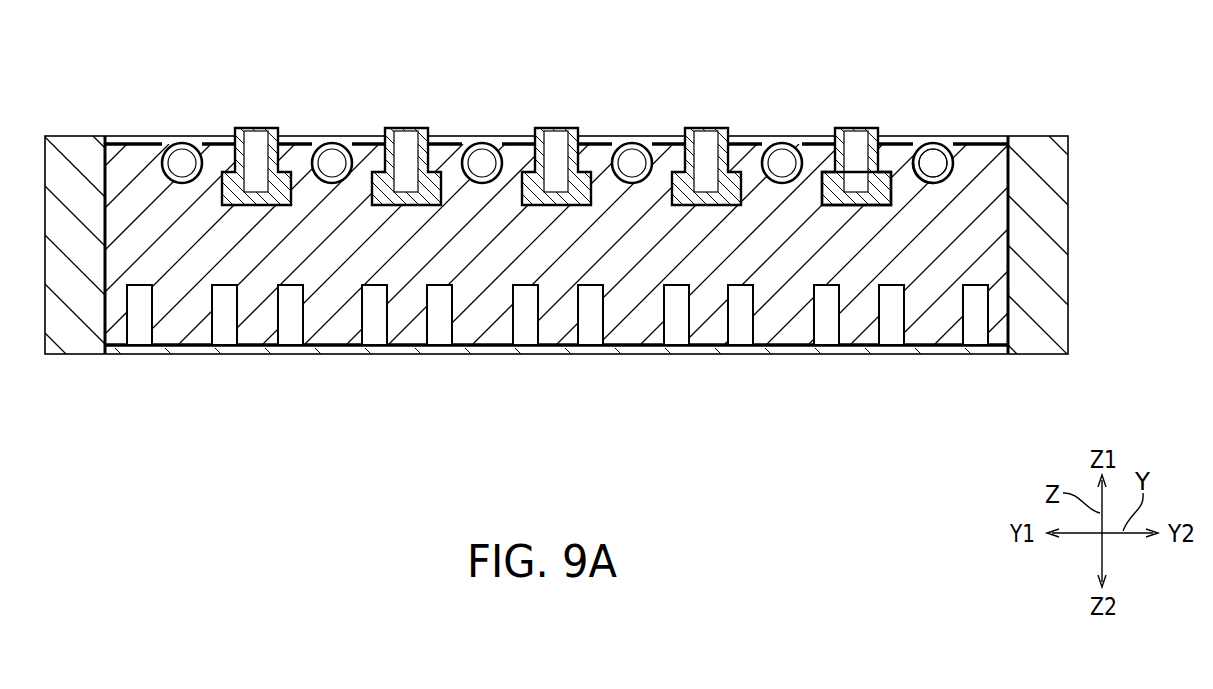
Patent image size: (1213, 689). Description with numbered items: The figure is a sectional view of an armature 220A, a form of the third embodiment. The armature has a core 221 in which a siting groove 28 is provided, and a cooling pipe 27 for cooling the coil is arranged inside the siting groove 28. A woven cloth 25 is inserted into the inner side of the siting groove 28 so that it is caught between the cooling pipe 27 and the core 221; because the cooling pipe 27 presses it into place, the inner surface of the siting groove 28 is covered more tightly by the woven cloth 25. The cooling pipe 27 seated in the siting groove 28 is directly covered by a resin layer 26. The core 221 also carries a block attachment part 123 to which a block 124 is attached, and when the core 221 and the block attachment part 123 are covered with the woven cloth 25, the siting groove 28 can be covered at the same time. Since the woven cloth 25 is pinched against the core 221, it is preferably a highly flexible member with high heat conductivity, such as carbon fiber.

The armature 220A is at (1054, 109).
The block 124 is at (855, 127).
The cooling pipe 27 is at (934, 156).
The core 221 is at (982, 152).
The resin layer 26 is at (1060, 223).
The woven cloth 25 is at (943, 180).
The siting groove 28 is at (912, 185).
The block attachment part 123 is at (816, 196).